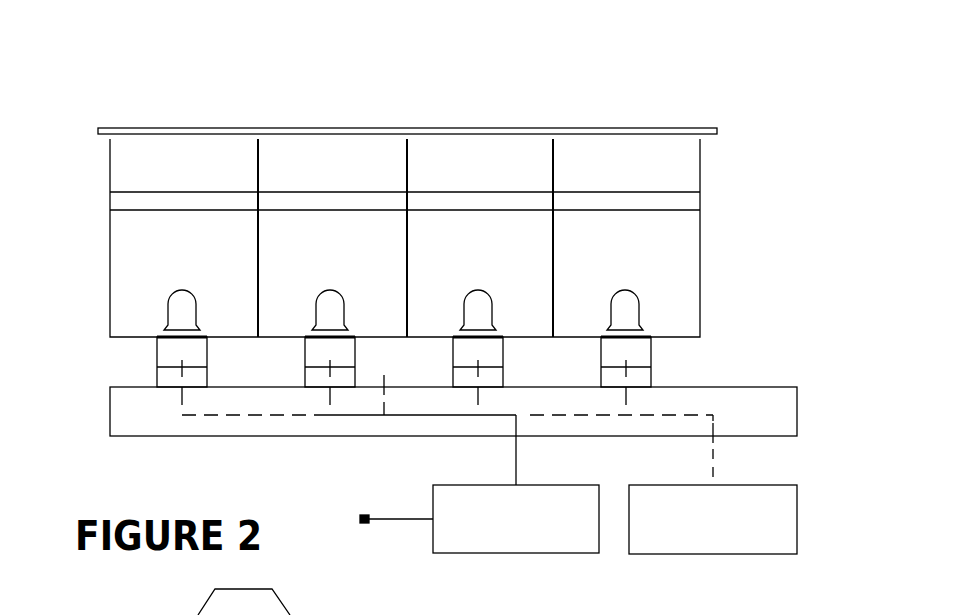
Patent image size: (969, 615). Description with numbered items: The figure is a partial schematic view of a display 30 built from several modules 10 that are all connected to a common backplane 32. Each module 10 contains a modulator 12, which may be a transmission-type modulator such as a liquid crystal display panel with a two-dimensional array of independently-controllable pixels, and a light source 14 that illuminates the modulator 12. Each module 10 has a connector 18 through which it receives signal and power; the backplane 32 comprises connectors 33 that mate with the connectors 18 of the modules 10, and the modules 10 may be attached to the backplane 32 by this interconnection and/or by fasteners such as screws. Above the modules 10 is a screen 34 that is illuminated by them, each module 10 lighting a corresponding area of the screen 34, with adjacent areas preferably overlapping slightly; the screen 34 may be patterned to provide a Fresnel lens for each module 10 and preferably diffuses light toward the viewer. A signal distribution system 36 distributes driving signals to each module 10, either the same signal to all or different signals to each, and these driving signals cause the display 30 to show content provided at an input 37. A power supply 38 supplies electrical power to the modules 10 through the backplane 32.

The display 30 is at (634, 55).
The screen 34 is at (135, 128).
The module 10 is at (92, 172).
The modulator 12 is at (130, 210).
The light source 14 is at (180, 310).
The connector 18 is at (157, 347).
The connector 33 is at (157, 377).
The backplane 32 is at (110, 413).
The signal distribution system 36 is at (453, 553).
The input 37 is at (374, 524).
The power supply 38 is at (713, 554).